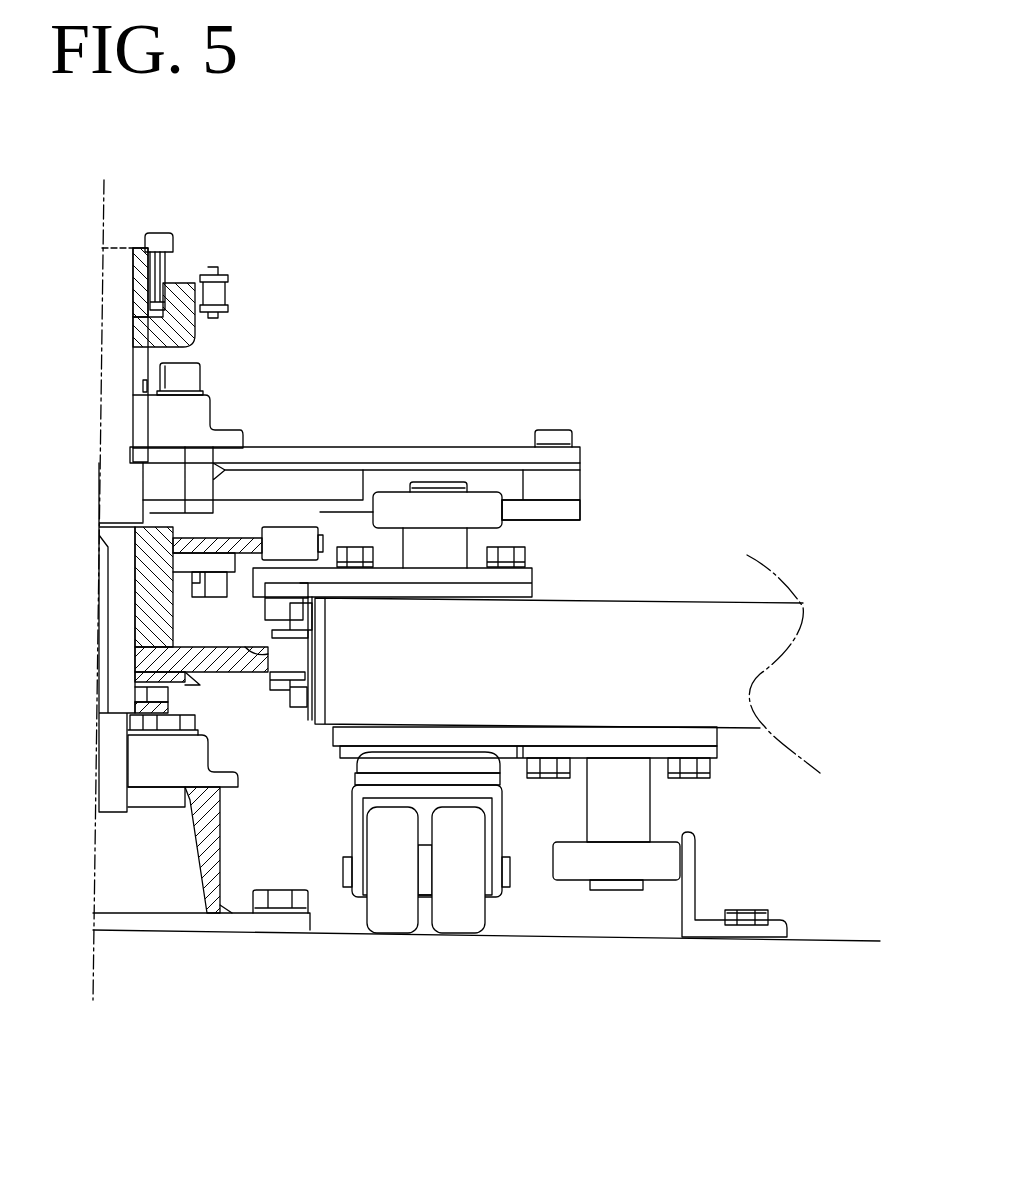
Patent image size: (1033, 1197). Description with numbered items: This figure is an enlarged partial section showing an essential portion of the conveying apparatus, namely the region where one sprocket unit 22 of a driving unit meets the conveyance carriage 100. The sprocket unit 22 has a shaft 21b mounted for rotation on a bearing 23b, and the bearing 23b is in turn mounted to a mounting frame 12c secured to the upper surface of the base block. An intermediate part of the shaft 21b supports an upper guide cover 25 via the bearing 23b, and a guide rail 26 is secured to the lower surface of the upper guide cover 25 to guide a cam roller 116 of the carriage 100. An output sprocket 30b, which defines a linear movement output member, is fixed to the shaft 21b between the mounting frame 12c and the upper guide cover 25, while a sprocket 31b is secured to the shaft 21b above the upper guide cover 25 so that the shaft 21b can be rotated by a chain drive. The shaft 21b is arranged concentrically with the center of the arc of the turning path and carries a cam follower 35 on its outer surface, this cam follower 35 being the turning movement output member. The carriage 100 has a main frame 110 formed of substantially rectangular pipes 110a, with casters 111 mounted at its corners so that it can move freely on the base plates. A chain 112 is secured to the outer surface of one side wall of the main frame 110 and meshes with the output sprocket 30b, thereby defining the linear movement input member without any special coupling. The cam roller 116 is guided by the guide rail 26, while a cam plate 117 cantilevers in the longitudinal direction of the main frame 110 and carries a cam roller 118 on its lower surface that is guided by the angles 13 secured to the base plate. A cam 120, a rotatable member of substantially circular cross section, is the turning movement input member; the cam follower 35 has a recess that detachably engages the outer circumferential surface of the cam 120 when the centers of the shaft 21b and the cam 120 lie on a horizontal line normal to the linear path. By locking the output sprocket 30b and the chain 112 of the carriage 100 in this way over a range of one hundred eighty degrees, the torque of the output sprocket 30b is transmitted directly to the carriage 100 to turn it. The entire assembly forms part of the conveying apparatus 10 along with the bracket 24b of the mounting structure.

The apparatus 10 is at (612, 166).
The carriage 100 is at (668, 470).
The main frame 110 is at (783, 664).
The rectangular pipes 110a is at (670, 640).
The casters 111 is at (466, 912).
The chain 112 is at (290, 680).
The cam roller 116 is at (482, 511).
The cam plate 117 is at (708, 753).
The cam roller 118 is at (585, 862).
The cam 120 is at (280, 540).
The mounting frame 12c is at (205, 880).
The angles 13 is at (692, 862).
The shaft 21b is at (122, 257).
The sprocket unit 22 is at (233, 221).
The bearing 23b is at (160, 775).
The upper bracket 24b is at (202, 412).
The upper guide cover 25 is at (408, 462).
The guide rail 26 is at (565, 521).
The output sprocket 30b is at (272, 652).
The sprocket 31b is at (196, 326).
The cam follower 35 is at (243, 536).